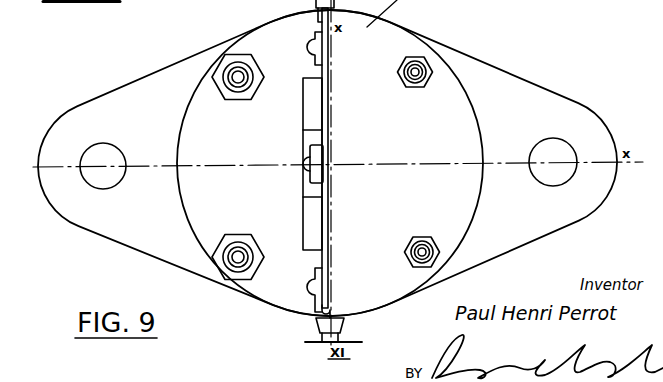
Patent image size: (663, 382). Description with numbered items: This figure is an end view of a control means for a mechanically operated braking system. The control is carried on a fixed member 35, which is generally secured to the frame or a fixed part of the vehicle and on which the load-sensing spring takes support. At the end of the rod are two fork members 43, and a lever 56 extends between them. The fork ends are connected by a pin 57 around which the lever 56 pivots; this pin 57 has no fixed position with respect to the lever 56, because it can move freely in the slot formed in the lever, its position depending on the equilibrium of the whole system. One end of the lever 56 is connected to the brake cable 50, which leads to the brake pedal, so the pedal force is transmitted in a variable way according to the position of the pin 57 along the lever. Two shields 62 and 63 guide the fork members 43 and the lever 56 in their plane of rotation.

The fixed member 35 is at (530, 98).
The fork members 43 is at (318, 154).
The brake cable 50 is at (342, 330).
The lever 56 is at (328, 124).
The pin 57 is at (305, 165).
The shield 62 is at (303, 218).
The shield 63 is at (303, 112).